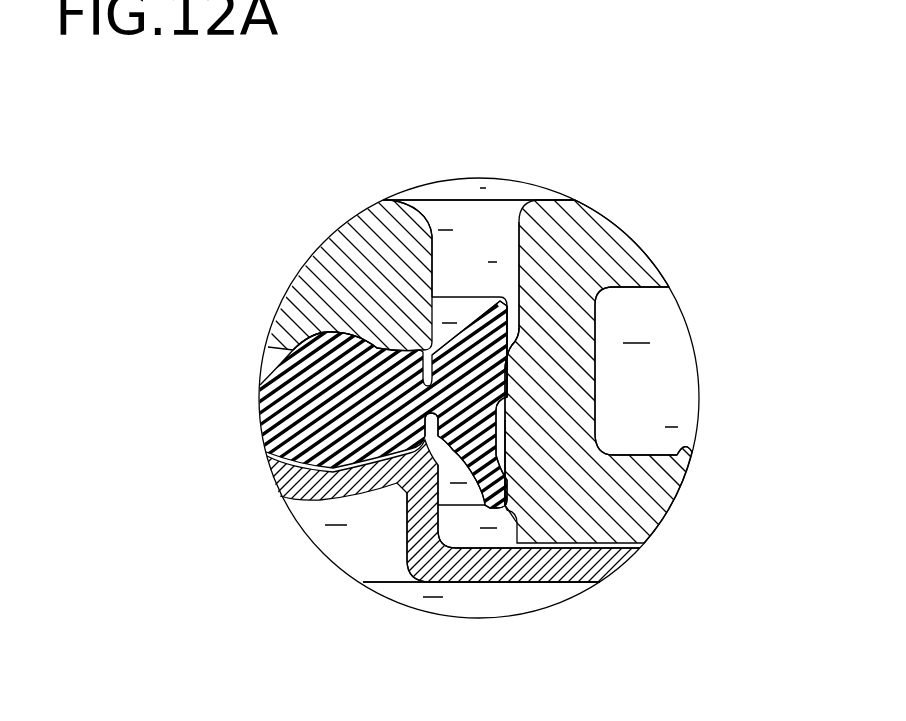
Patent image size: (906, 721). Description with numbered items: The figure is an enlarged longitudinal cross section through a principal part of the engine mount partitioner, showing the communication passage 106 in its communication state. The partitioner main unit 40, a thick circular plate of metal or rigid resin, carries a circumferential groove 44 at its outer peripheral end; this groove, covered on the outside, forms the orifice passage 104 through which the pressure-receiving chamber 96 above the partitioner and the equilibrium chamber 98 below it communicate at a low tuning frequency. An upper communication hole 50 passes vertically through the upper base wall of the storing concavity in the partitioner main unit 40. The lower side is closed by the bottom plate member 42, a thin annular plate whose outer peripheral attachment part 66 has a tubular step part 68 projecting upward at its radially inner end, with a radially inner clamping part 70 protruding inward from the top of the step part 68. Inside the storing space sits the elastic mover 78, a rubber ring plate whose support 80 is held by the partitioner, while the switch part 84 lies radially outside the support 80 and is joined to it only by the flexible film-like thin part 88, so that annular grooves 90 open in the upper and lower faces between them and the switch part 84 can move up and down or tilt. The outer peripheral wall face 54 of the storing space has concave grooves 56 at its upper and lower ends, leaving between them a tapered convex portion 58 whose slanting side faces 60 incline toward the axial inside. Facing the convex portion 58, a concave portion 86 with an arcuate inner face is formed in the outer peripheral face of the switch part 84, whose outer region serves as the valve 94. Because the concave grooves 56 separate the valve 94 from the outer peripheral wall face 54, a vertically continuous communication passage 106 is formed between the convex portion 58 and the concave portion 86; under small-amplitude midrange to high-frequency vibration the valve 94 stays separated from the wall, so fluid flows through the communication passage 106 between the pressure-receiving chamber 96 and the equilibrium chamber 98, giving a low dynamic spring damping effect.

The partitioner main unit 40 is at (585, 242).
The bottom plate member 42 is at (418, 570).
The circumferential groove 44 is at (694, 447).
The upper communication hole 50 is at (432, 232).
The outer peripheral wall face 54 is at (503, 372).
The concave groove 56 is at (505, 282).
The convex portion 58 is at (510, 420).
The side face 60 is at (512, 328).
The outer peripheral attachment part 66 is at (565, 565).
The step part 68 is at (403, 487).
The radially inner clamping part 70 is at (303, 480).
The elastic mover 78 is at (327, 330).
The support 80 is at (323, 393).
The switch part 84 is at (472, 372).
The concave portion 86 is at (503, 430).
The thin part 88 is at (427, 386).
The annular groove 90 is at (393, 280).
The valve 94 is at (502, 272).
The pressure-receiving chamber 96 is at (535, 195).
The equilibrium chamber 98 is at (540, 590).
The orifice passage 104 is at (668, 370).
The communication passage 106 is at (500, 398).